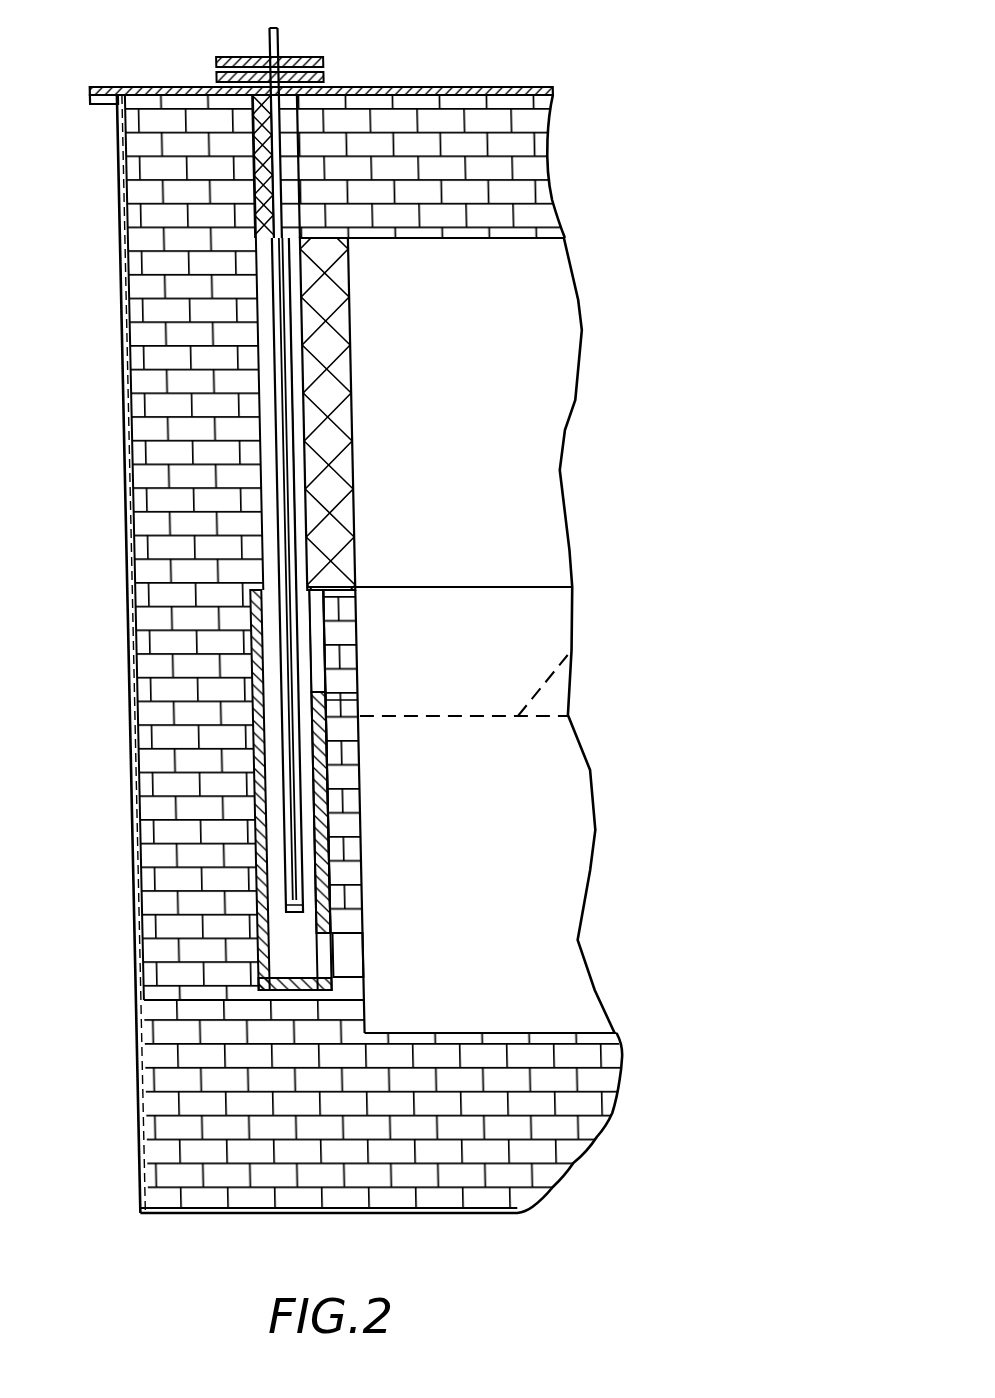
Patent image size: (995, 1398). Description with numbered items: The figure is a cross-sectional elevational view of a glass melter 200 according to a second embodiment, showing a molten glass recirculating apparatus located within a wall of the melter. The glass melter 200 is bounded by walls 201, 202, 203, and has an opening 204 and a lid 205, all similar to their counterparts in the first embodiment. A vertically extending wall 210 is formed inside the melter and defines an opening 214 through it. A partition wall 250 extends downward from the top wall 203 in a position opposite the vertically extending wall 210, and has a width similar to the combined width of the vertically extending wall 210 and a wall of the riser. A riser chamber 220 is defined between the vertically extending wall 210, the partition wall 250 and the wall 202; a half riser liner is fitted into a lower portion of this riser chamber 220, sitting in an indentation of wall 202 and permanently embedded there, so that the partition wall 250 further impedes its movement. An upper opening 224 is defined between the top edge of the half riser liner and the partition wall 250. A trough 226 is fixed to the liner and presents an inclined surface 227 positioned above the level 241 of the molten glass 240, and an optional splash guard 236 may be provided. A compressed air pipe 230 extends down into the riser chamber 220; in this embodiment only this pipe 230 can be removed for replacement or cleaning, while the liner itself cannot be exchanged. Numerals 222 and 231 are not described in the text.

The glass melter 200 is at (611, 366).
The wall 201 is at (550, 1030).
The wall 202 is at (144, 621).
The wall 203 is at (458, 86).
The opening 204 is at (299, 145).
The lid 205 is at (311, 53).
The vertically extending wall 210 is at (348, 830).
The opening 214 is at (339, 960).
The riser chamber 220 is at (237, 853).
The channel bottom 222 is at (302, 945).
The upper opening 224 is at (301, 627).
The trough 226 is at (352, 700).
The inclined surface 227 is at (335, 698).
The compressed air pipe 230 is at (269, 402).
The tube closed end 231 is at (270, 915).
The splash guard 236 is at (288, 587).
The molten glass 240 is at (530, 807).
The level 241 is at (556, 656).
The partition wall 250 is at (350, 345).